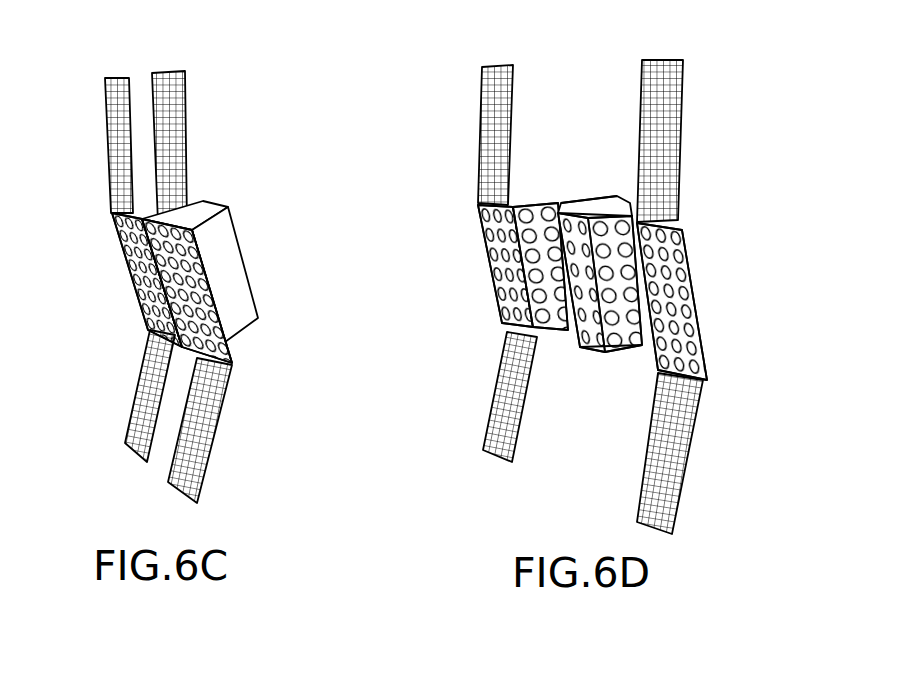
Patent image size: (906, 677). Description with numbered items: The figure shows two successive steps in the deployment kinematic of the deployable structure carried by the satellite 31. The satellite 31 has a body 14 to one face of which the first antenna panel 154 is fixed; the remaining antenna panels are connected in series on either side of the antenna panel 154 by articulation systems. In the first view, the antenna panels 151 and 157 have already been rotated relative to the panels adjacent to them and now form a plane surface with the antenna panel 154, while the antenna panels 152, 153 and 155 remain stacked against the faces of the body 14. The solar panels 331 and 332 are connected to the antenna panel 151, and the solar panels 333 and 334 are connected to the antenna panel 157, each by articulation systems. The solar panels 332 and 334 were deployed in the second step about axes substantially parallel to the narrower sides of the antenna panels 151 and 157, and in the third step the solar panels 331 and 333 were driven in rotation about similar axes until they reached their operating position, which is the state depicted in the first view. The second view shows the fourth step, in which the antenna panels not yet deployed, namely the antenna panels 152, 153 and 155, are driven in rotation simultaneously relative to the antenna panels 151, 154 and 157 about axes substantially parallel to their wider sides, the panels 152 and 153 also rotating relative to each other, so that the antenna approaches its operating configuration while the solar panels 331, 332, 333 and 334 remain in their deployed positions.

In FIG. 6C, the body 14 is at (223, 205).
In FIG. 6D, the body 14 is at (620, 198).
In FIG. 6C, the satellite 31 is at (280, 252).
In FIG. 6D, the satellite 31 is at (747, 326).
In FIG. 6C, the antenna panel 151 is at (135, 276).
In FIG. 6D, the antenna panel 151 is at (490, 265).
In FIG. 6D, the antenna panel 152 is at (553, 326).
In FIG. 6D, the antenna panel 153 is at (577, 200).
In FIG. 6C, the first antenna panel 154 is at (183, 345).
In FIG. 6D, the first antenna panel 154 is at (607, 347).
In FIG. 6D, the antenna panel 155 is at (640, 348).
In FIG. 6C, the antenna panel 157 is at (232, 340).
In FIG. 6D, the antenna panel 157 is at (688, 275).
In FIG. 6C, the solar panel 331 is at (153, 370).
In FIG. 6D, the solar panel 331 is at (502, 408).
In FIG. 6C, the solar panel 332 is at (117, 157).
In FIG. 6D, the solar panel 332 is at (490, 110).
In FIG. 6C, the solar panel 333 is at (213, 423).
In FIG. 6D, the solar panel 333 is at (680, 432).
In FIG. 6C, the solar panel 334 is at (173, 117).
In FIG. 6D, the solar panel 334 is at (665, 172).